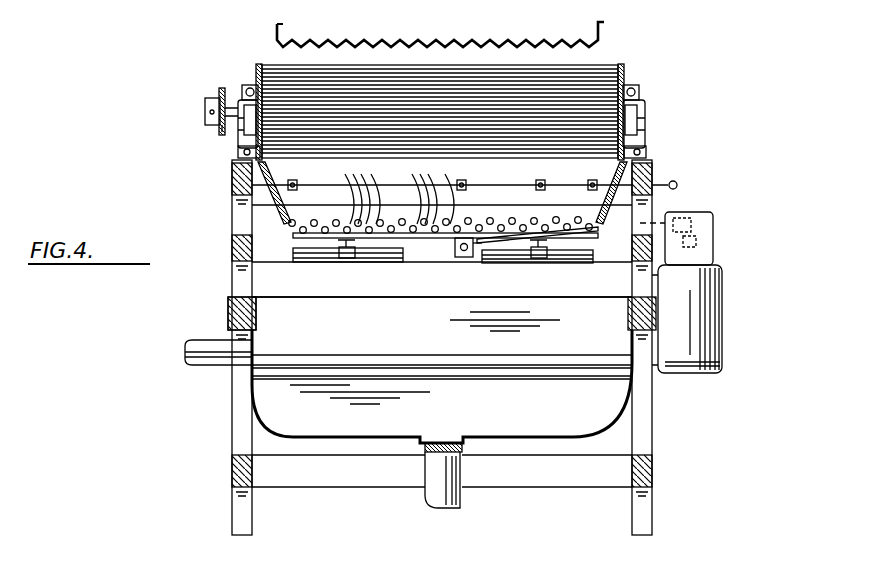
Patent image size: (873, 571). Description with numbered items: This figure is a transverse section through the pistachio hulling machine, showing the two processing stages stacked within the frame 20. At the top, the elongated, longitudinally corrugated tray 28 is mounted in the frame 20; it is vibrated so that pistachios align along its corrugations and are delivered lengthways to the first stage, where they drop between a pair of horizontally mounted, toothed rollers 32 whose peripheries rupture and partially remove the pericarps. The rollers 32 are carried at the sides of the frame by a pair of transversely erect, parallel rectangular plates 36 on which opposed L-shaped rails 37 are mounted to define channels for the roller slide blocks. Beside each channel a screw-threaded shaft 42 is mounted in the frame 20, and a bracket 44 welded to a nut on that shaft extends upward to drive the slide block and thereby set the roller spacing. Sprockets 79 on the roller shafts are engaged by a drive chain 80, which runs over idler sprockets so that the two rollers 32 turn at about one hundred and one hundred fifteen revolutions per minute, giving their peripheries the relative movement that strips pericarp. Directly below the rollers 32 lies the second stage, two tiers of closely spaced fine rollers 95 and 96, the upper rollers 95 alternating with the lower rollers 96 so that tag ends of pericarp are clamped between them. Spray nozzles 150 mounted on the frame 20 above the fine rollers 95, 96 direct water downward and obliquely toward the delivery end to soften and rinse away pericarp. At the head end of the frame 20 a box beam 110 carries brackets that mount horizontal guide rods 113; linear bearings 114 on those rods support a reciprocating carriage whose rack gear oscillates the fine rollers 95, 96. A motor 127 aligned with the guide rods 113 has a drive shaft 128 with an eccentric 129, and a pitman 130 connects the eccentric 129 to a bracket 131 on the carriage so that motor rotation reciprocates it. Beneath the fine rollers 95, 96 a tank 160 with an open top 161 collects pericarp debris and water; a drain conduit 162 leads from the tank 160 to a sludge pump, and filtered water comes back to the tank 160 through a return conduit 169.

The frame 20 is at (648, 472).
The elongated tray 28 is at (428, 38).
The rollers 32 is at (588, 72).
The rectangular plates 36 is at (258, 66).
The L-shaped rails 37 is at (249, 87).
The bracket 44 is at (238, 140).
The screw-threaded shaft 42 is at (243, 156).
The drive chain 80 is at (222, 91).
The sprockets 79 is at (207, 125).
The spray nozzles 150 is at (289, 188).
The fine rollers 95 is at (445, 206).
The fine rollers 96 is at (441, 203).
The pitman 130 is at (498, 240).
The guide rods 113 is at (306, 262).
The linear bearings 114 is at (348, 258).
The bracket 131 is at (466, 258).
The box beam 110 is at (408, 284).
The open top 161 is at (236, 300).
The tank 160 is at (270, 408).
The return conduit 169 is at (205, 366).
The drain conduit 162 is at (462, 500).
The motor 127 is at (712, 318).
The drive shaft 128 is at (700, 245).
The eccentric 129 is at (692, 227).